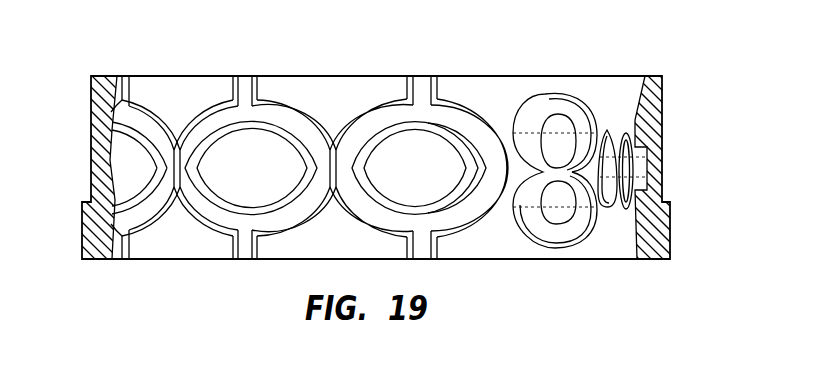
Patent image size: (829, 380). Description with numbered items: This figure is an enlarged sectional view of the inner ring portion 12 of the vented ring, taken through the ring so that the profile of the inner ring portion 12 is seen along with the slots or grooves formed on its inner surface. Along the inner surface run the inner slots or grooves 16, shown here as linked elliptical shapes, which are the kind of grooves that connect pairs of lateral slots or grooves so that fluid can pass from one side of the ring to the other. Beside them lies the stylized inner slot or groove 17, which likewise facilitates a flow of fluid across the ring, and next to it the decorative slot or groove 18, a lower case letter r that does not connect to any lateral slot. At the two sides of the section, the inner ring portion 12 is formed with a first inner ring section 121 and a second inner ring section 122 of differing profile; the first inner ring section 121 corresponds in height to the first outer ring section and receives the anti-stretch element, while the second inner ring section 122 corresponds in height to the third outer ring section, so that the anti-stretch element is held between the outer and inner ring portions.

The inner ring portion 12 is at (82, 48).
The first inner ring section 121 is at (91, 108).
The second inner ring section 122 is at (82, 230).
The inner slots or grooves 16 is at (266, 120).
The stylized inner slot or groove 17 is at (565, 108).
The decorative slot or groove 18 is at (607, 135).